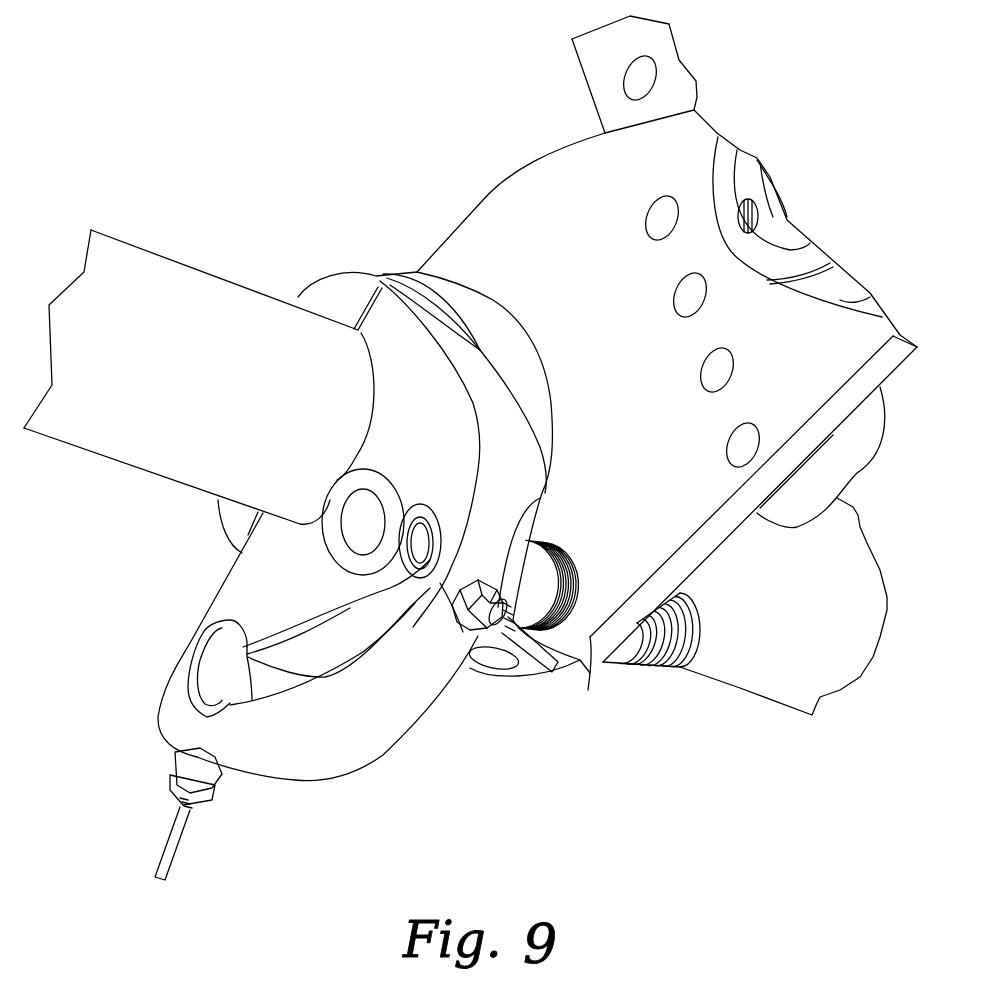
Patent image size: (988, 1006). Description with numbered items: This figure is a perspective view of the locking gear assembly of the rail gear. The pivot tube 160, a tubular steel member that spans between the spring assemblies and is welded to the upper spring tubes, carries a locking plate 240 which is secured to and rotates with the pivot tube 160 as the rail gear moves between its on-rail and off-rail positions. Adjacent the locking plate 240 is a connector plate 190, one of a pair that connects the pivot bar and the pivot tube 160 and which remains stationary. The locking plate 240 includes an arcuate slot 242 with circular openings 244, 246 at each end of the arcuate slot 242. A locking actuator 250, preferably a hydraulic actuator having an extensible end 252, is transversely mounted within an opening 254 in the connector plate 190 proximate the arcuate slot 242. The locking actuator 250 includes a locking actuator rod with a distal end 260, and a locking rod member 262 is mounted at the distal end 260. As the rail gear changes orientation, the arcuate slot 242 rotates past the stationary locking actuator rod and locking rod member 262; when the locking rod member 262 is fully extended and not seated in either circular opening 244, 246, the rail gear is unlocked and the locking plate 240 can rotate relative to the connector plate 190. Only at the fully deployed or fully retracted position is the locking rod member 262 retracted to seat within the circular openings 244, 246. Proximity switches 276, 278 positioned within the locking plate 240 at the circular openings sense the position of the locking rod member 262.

The pivot tube 160 is at (82, 432).
The connector plate 190 is at (487, 232).
The locking plate 240 is at (393, 722).
The arcuate slot 242 is at (268, 687).
The circular opening 244 is at (200, 662).
The circular opening 246 is at (407, 560).
The locking actuator 250 is at (595, 655).
The extensible end 252 is at (333, 492).
The opening 254 is at (588, 577).
The distal end 260 is at (438, 520).
The locking rod member 262 is at (420, 507).
The proximity switch 276 is at (167, 777).
The proximity switch 278 is at (540, 498).